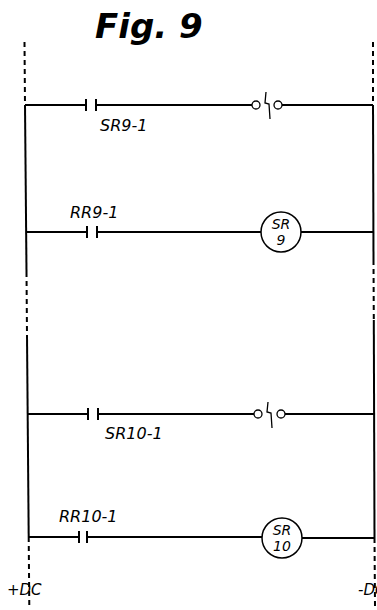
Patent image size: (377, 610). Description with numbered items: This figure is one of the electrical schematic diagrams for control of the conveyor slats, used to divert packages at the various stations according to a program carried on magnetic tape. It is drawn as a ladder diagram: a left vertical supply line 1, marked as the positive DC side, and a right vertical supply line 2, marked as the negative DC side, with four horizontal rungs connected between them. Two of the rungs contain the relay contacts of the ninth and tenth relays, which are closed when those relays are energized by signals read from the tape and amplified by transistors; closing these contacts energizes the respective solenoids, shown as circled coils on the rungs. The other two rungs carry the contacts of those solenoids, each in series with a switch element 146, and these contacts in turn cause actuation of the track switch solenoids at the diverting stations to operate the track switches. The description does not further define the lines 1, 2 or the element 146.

The positive DC supply line 1 is at (24, 316).
The negative DC supply line 2 is at (369, 316).
The normally closed switch 146 is at (267, 93).